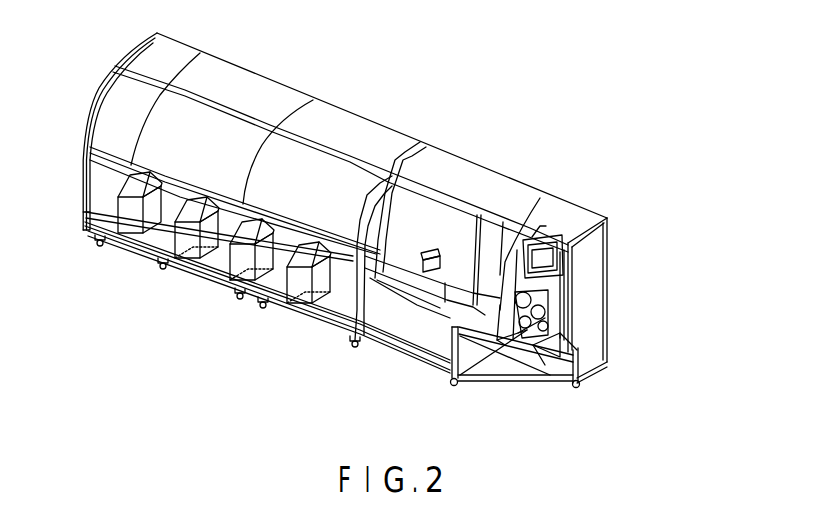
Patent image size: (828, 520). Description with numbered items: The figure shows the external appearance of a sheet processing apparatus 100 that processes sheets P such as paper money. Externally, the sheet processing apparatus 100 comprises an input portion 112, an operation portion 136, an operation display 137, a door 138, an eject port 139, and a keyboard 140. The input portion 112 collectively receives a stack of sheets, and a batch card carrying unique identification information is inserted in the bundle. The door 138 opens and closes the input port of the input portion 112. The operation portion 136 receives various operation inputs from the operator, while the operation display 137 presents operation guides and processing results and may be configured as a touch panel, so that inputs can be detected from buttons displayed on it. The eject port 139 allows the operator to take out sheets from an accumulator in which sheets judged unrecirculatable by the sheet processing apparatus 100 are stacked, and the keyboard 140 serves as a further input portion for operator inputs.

The sheet processing apparatus 100 is at (489, 108).
The input portion 112 is at (531, 238).
The operation display 137 is at (571, 267).
The eject port 139 is at (560, 297).
The door 138 is at (498, 302).
The operation portion 136 is at (463, 374).
The keyboard 140 is at (534, 358).